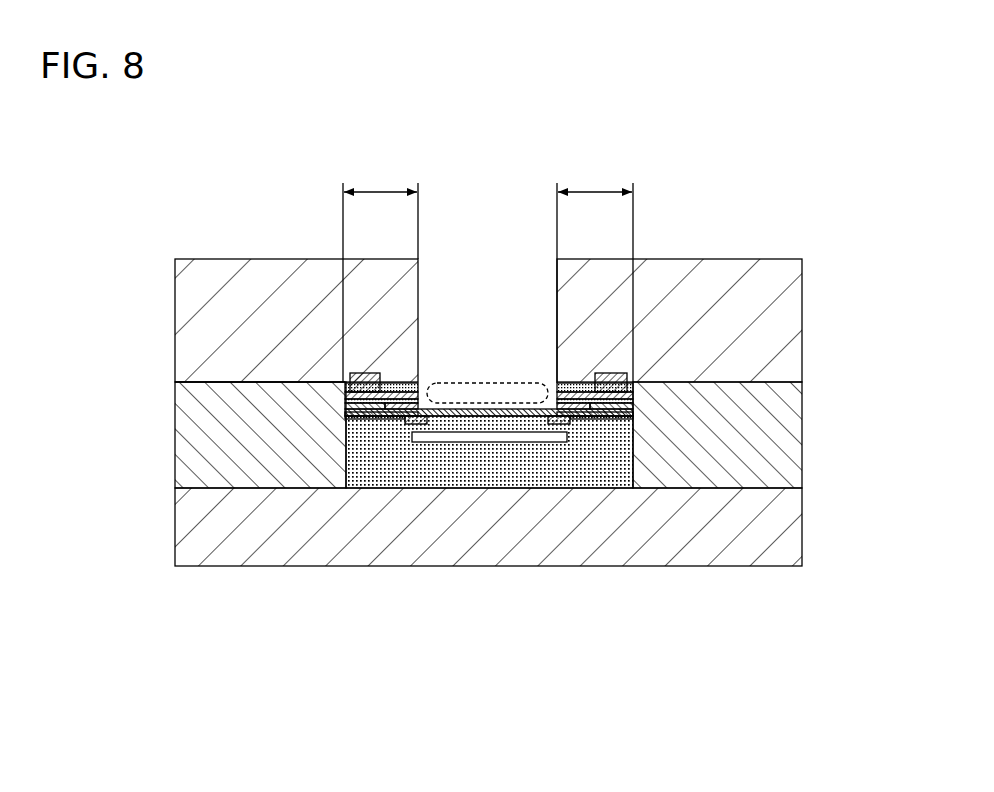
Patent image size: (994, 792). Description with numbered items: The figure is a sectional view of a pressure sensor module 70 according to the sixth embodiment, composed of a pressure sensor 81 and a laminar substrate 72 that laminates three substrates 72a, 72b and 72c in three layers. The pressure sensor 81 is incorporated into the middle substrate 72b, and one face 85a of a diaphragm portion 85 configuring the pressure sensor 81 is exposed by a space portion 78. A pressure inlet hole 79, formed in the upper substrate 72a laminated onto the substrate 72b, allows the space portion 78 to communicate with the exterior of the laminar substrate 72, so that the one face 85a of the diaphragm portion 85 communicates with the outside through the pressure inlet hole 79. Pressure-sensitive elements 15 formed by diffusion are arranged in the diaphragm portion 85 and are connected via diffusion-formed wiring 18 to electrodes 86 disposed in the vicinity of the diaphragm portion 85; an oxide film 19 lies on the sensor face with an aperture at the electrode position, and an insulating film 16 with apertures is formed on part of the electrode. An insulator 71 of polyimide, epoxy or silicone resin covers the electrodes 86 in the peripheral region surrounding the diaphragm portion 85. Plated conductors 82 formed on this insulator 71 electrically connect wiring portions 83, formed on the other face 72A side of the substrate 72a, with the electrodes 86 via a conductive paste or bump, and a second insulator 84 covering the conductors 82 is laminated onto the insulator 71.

The pressure sensor module 70 is at (502, 428).
The laminar substrate 72 is at (554, 412).
The substrate 72a is at (776, 320).
The substrate 72b is at (780, 447).
The substrate 72c is at (529, 527).
The other face 72A is at (198, 383).
The space portion 78 is at (496, 383).
The pressure inlet hole 79 is at (555, 295).
The pressure sensor 81 is at (463, 396).
The conductors 82 is at (412, 392).
The wiring portions 83 is at (368, 373).
The second insulator 84 is at (340, 384).
The diaphragm portion 85 is at (489, 553).
The one face 85a is at (506, 418).
The electrodes 86 is at (388, 417).
The insulator 71 is at (345, 394).
The insulating film 16 is at (346, 404).
The oxide film 19 is at (365, 414).
The wiring 18 is at (410, 418).
The pressure-sensitive elements 15 is at (433, 420).